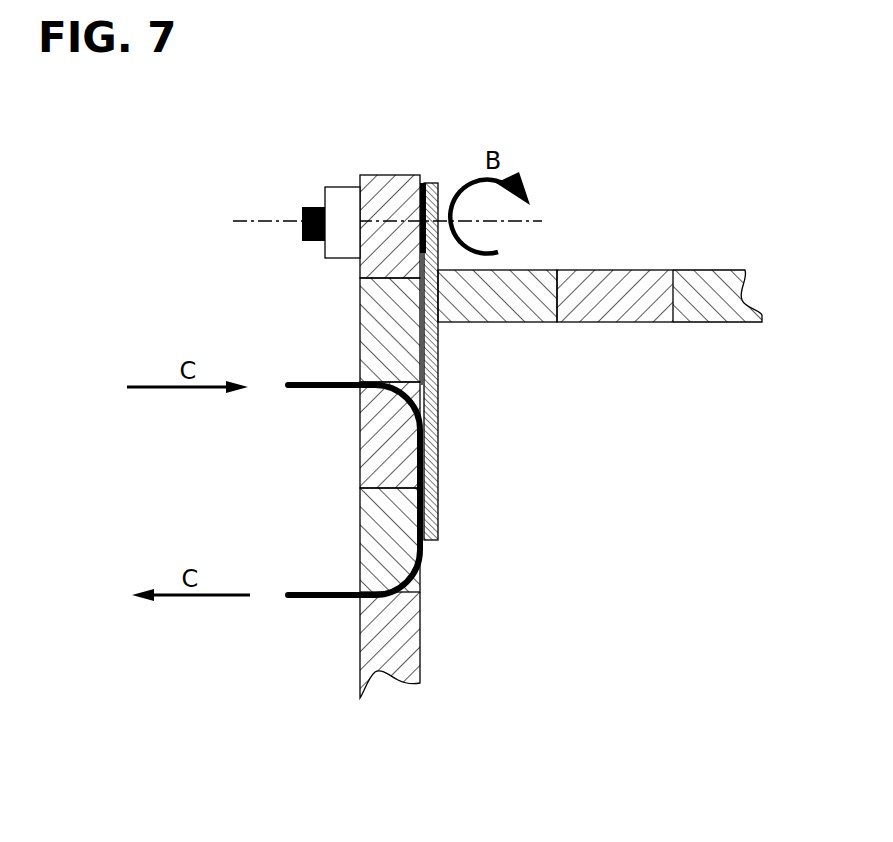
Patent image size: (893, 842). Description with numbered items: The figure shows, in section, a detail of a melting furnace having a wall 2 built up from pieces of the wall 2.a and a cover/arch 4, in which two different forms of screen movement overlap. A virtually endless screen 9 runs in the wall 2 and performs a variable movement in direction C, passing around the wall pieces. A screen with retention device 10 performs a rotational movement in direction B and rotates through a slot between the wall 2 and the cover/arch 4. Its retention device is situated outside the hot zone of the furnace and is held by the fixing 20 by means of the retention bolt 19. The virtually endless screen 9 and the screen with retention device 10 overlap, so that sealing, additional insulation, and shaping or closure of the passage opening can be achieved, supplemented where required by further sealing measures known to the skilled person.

The wall 2 is at (420, 404).
The pieces of the wall 2.a is at (395, 187).
The cover/arch 4 is at (630, 242).
The virtually endless screen 9 is at (318, 601).
The screen with retention device 10 is at (438, 383).
The retention bolt 19 is at (298, 221).
The fixing 20 is at (345, 198).